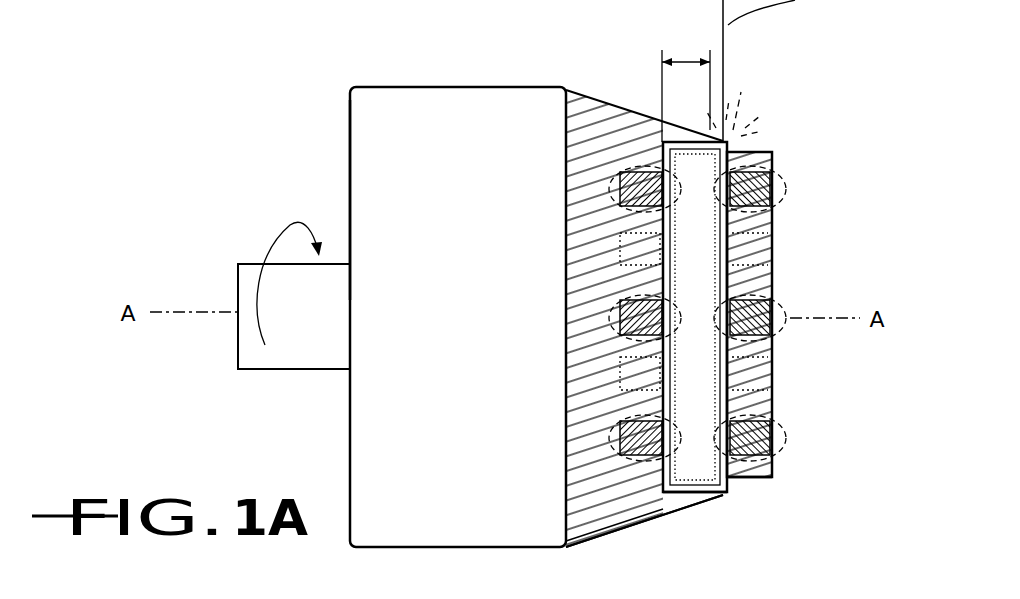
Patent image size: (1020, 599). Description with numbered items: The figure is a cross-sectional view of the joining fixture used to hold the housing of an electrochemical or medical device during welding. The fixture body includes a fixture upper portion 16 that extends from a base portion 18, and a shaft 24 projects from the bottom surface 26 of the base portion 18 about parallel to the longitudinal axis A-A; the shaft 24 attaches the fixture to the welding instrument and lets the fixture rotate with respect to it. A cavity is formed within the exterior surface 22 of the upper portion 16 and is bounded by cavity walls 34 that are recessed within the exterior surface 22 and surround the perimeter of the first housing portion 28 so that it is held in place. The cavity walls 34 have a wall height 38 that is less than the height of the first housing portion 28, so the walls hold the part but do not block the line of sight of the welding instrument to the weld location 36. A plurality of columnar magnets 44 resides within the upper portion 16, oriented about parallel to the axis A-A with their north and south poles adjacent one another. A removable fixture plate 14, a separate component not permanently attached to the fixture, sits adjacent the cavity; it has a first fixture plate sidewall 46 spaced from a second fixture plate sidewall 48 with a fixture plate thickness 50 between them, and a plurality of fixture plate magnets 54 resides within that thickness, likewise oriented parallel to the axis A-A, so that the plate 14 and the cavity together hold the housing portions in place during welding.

The fixture plate 14 is at (608, 349).
The fixture upper portion 16 is at (600, 508).
The base portion 18 is at (470, 520).
The exterior surface 22 is at (720, 500).
The shaft 24 is at (288, 355).
The bottom surface 26 is at (347, 198).
The first housing portion 28 is at (683, 497).
The cavity walls 34 is at (660, 163).
The weld location 36 is at (734, 141).
The wall height 38 is at (684, 56).
The magnets 44 is at (620, 307).
The first fixture plate sidewall 46 is at (626, 350).
The second fixture plate sidewall 48 is at (773, 247).
The fixture plate thickness 50 is at (750, 478).
The fixture plate magnets 54 is at (772, 183).